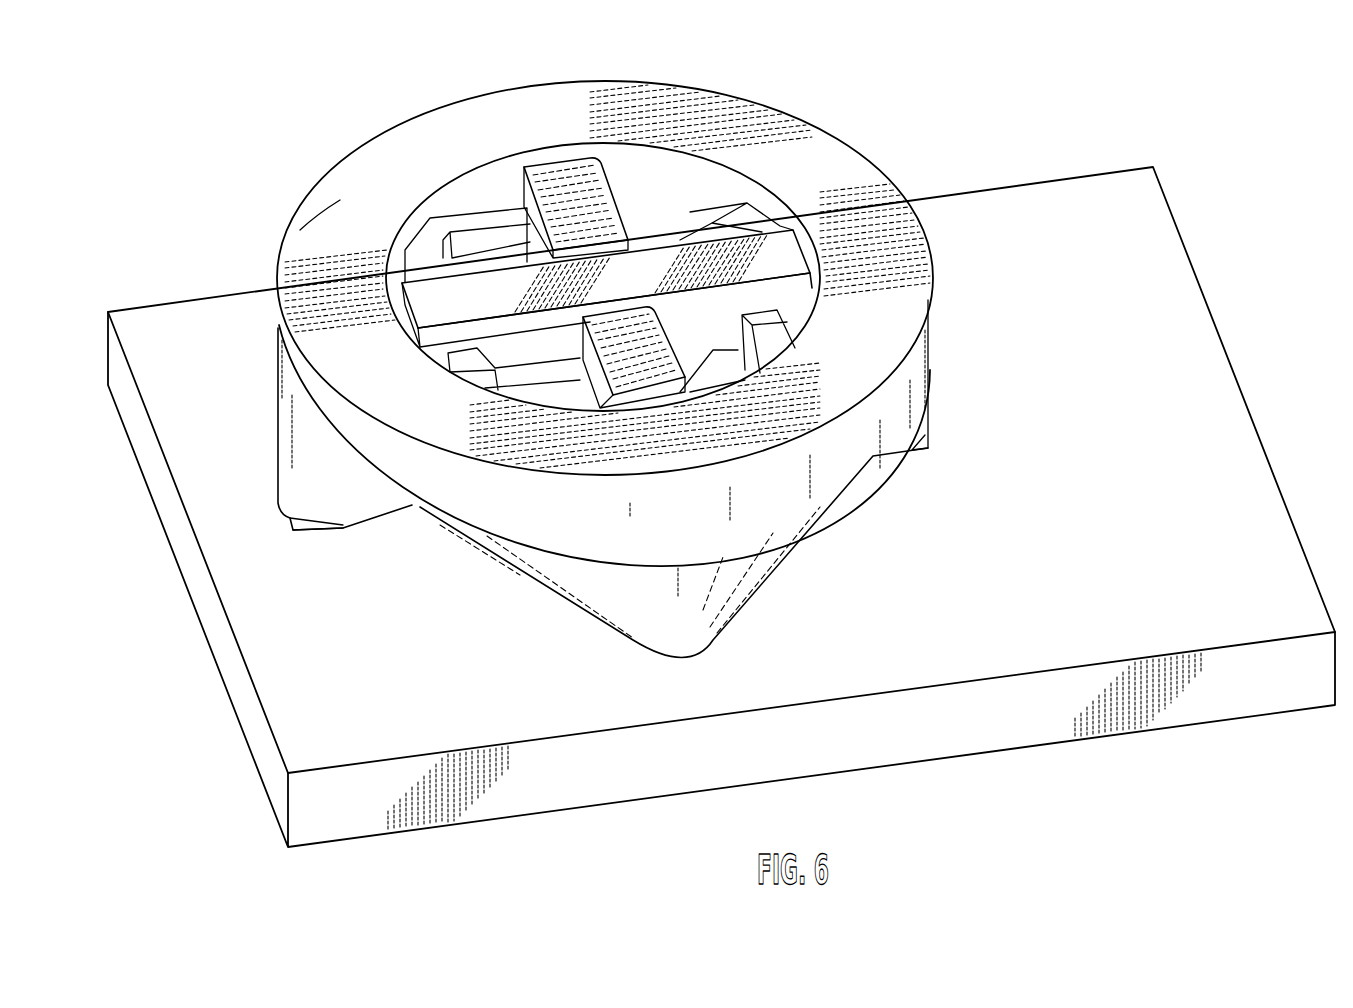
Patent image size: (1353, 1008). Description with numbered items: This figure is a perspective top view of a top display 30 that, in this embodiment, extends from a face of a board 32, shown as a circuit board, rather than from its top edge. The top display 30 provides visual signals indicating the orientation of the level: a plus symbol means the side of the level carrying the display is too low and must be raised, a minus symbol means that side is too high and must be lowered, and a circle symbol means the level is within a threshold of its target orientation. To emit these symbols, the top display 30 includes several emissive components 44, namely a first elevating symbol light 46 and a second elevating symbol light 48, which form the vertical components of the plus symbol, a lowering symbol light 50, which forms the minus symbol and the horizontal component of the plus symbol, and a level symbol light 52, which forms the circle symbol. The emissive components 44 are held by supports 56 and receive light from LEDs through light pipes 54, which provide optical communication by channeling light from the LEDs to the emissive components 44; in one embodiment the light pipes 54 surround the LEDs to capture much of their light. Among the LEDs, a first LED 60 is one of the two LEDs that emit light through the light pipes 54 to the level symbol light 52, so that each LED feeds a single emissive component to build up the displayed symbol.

The top display 30 is at (363, 143).
The board 32 is at (1153, 167).
The emissive components 44 is at (557, 170).
The first elevating symbol light 46 is at (582, 172).
The second elevating symbol light 48 is at (645, 330).
The lowering symbol light 50 is at (657, 270).
The level symbol light 52 is at (330, 230).
The light pipes 54 is at (298, 463).
The supports 56 is at (465, 220).
The first LED 60 is at (300, 533).